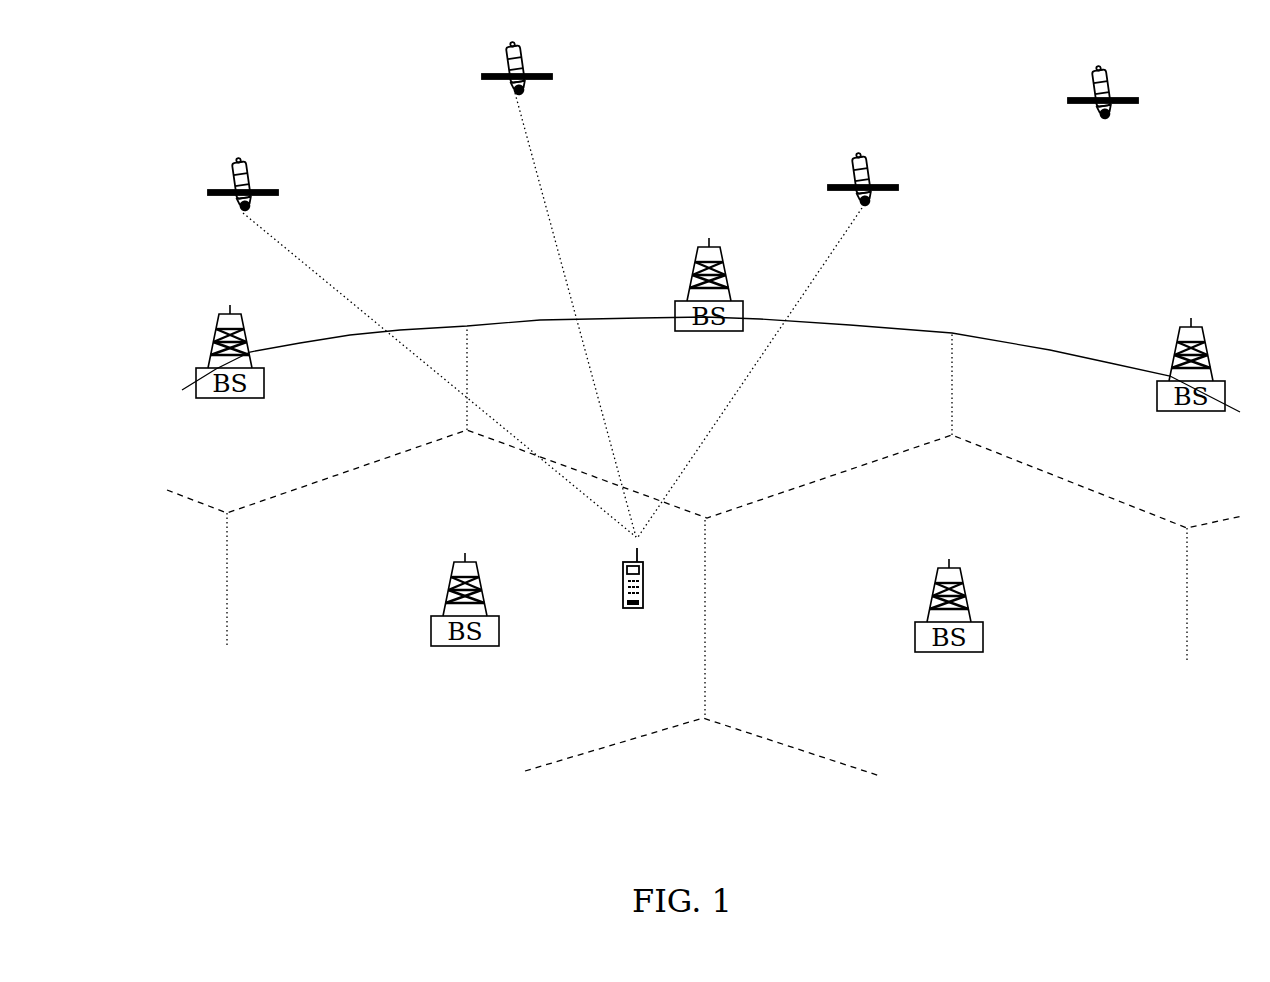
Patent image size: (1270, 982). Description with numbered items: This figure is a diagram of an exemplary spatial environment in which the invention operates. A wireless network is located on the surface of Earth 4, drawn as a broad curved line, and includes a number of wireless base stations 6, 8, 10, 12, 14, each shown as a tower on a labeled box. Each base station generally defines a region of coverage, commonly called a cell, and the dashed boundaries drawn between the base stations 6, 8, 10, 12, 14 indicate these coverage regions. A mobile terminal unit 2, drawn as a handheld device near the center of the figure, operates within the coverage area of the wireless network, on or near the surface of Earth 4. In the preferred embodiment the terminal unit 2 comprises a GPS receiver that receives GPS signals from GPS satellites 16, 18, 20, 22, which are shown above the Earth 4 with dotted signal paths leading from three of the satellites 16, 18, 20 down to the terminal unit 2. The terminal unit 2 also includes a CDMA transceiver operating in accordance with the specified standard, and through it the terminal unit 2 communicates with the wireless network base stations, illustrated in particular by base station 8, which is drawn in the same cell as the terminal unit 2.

The mobile terminal unit 2 is at (628, 610).
The Earth 4 is at (997, 335).
The wireless base station 6 is at (240, 399).
The wireless base station 8 is at (445, 646).
The wireless base station 10 is at (705, 332).
The wireless base station 12 is at (935, 654).
The wireless base station 14 is at (1178, 413).
The GPS satellite 16 is at (262, 188).
The GPS satellite 18 is at (535, 73).
The GPS satellite 20 is at (880, 185).
The GPS satellite 22 is at (1120, 98).